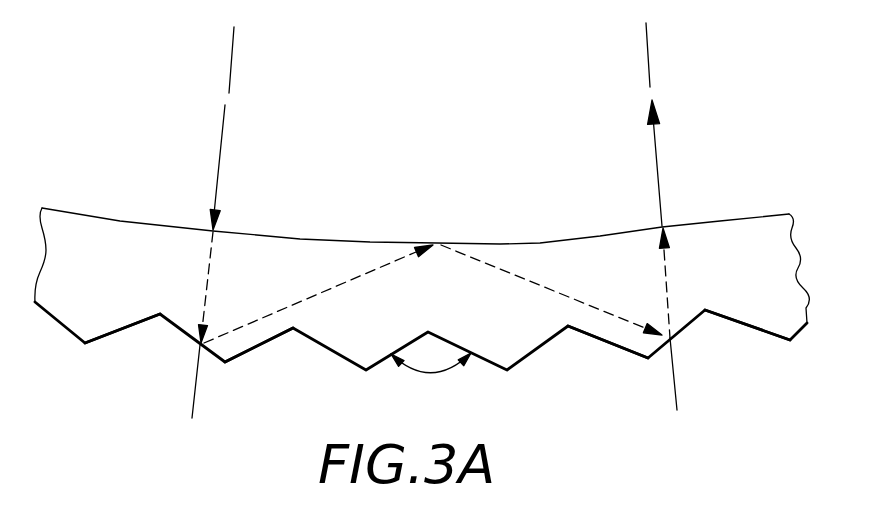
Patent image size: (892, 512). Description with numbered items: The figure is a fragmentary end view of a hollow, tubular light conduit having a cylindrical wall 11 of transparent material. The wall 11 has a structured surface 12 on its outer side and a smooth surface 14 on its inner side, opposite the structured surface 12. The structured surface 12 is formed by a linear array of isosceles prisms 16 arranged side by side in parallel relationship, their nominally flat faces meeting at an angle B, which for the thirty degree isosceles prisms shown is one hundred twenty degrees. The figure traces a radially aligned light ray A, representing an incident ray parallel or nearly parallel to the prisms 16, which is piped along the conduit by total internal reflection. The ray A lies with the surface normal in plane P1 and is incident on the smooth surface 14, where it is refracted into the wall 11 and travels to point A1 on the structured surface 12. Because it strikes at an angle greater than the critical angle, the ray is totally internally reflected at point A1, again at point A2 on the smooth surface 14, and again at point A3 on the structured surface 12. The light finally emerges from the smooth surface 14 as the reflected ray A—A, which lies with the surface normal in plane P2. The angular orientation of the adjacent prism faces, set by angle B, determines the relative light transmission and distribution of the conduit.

The wall 11 is at (778, 248).
The structured surface 12 is at (113, 336).
The smooth surface 14 is at (93, 213).
The isosceles prisms 16 is at (86, 333).
The plane P1 is at (233, 55).
The plane P2 is at (646, 42).
The point A1 is at (288, 312).
The point A2 is at (436, 243).
The point A3 is at (672, 339).
The angle beta B is at (431, 382).